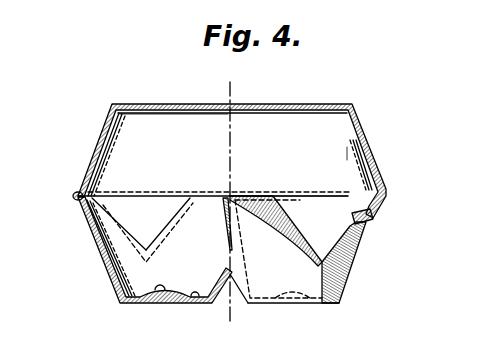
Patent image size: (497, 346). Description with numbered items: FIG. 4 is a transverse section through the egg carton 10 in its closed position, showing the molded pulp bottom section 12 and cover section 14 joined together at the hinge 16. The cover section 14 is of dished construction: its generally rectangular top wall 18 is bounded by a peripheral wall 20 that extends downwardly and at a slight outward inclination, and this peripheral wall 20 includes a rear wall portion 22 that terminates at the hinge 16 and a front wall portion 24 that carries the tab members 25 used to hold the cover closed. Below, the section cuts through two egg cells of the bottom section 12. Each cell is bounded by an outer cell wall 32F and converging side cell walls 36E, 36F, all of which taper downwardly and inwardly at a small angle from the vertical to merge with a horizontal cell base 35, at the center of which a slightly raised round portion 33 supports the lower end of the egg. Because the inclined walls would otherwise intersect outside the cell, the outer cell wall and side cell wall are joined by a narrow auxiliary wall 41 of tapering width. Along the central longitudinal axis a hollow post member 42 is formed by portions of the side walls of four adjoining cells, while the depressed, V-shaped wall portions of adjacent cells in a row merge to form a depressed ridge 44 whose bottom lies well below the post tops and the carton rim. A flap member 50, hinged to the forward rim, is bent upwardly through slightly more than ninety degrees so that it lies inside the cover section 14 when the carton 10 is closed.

The egg carton 10 is at (393, 187).
The bottom section 12 is at (235, 248).
The cover section 14 is at (227, 150).
The hinge 16 is at (73, 196).
The top wall 18 is at (193, 104).
The peripheral wall 20 is at (264, 116).
The rear wall portion 22 is at (98, 142).
The front wall portion 24 is at (373, 153).
The tab members 25 is at (386, 211).
The outer cell wall 32F is at (109, 262).
The round portion 33 is at (157, 297).
The cell base 35 is at (193, 298).
The side cell wall 36E is at (284, 251).
The side cell wall 36F is at (162, 230).
The auxiliary wall 41 is at (338, 275).
The post member 42 is at (247, 196).
The depressed ridge 44 is at (144, 248).
The flap member 50 is at (358, 147).